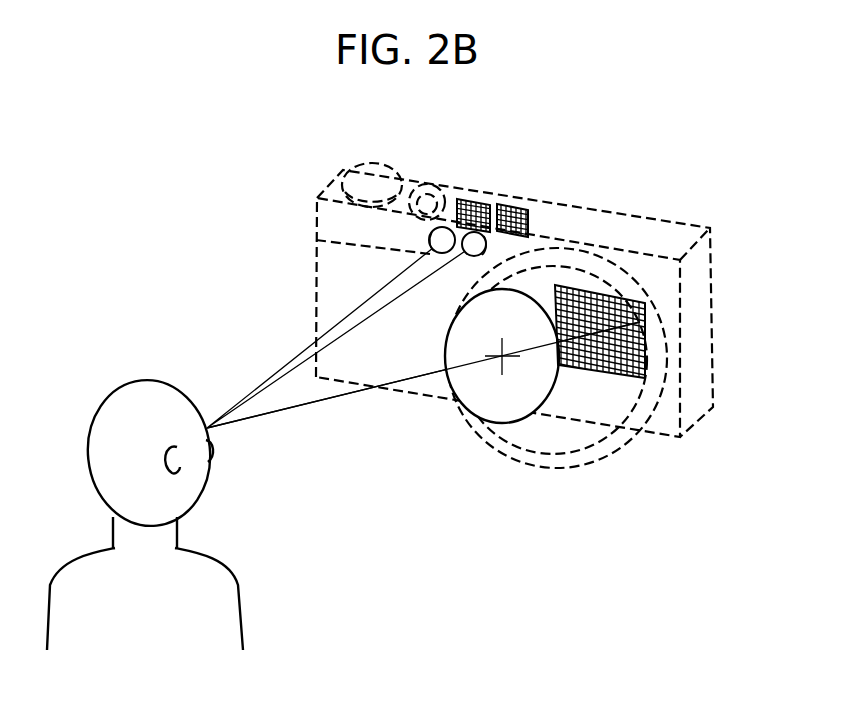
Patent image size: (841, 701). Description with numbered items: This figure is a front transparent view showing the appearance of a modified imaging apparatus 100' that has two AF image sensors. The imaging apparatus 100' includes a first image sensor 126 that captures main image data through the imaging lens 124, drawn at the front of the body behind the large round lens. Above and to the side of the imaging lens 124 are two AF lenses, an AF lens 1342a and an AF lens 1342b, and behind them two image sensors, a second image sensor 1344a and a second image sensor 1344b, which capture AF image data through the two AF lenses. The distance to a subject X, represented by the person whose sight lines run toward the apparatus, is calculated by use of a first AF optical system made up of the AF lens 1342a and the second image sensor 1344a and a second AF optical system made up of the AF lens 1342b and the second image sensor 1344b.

The imaging apparatus 100' is at (517, 306).
The imaging lens 124 is at (523, 410).
The first image sensor 126 is at (633, 320).
The AF lens 1342a is at (428, 242).
The AF lens 1342b is at (487, 250).
The second image sensor 1344a is at (468, 197).
The second image sensor 1344b is at (512, 204).
The subject X is at (88, 388).